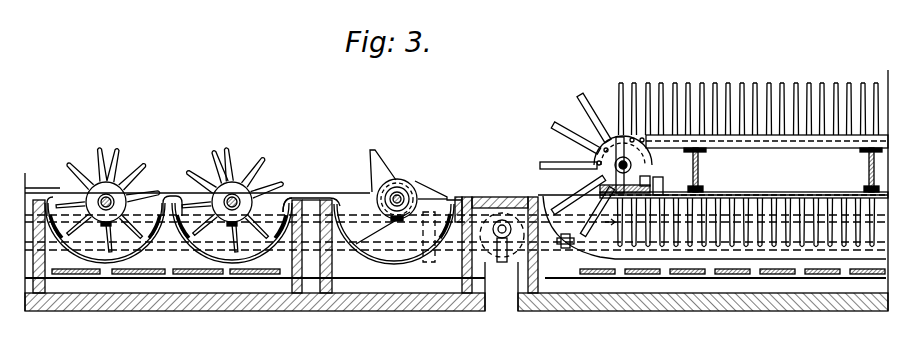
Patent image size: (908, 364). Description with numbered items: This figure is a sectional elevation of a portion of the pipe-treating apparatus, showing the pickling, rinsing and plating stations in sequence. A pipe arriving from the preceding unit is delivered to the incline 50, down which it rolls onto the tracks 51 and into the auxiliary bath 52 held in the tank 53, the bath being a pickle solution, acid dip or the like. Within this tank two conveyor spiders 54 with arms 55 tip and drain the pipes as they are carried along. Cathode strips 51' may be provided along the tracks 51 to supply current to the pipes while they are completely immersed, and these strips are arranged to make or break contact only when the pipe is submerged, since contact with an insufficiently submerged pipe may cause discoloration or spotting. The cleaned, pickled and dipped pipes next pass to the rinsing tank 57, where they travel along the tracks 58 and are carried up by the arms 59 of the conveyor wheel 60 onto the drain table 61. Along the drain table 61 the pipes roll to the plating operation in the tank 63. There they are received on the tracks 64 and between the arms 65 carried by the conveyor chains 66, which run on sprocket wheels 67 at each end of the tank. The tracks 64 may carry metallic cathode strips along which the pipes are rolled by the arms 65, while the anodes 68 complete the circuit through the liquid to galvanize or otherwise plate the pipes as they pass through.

The incline 50 is at (35, 198).
The tracks 51 is at (162, 216).
The cathode strips 51' is at (168, 237).
The auxiliary bath 52 is at (169, 263).
The tank 53 is at (222, 300).
The conveyor spiders 54 is at (112, 182).
The arms 55 is at (111, 160).
The rinsing tank 57 is at (407, 300).
The tracks 58 is at (388, 214).
The arms 59 is at (373, 150).
The conveyor wheel 60 is at (403, 180).
The drain table 61 is at (487, 196).
The tank 63 is at (745, 300).
The tracks 64 is at (596, 242).
The arms 65 is at (746, 86).
The conveyor chains 66 is at (606, 143).
The sprocket wheels 67 is at (648, 160).
The anodes 68 is at (651, 280).